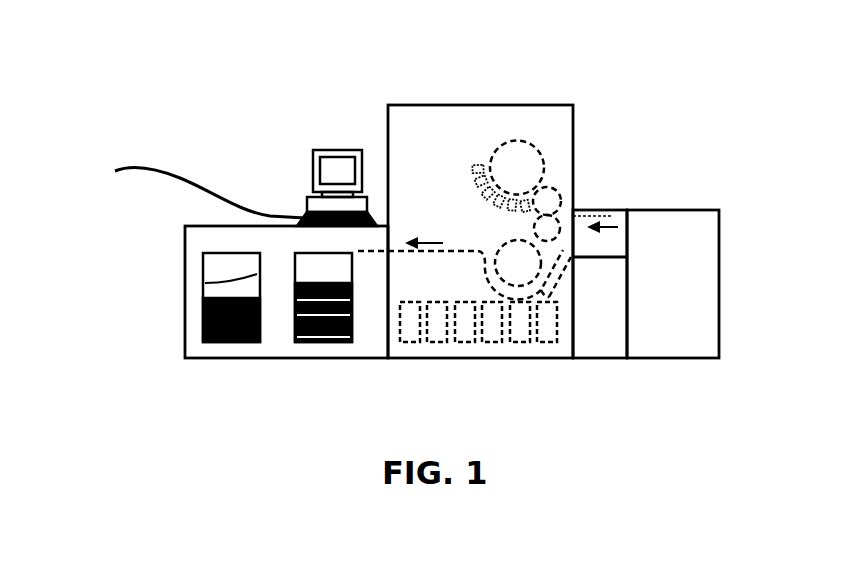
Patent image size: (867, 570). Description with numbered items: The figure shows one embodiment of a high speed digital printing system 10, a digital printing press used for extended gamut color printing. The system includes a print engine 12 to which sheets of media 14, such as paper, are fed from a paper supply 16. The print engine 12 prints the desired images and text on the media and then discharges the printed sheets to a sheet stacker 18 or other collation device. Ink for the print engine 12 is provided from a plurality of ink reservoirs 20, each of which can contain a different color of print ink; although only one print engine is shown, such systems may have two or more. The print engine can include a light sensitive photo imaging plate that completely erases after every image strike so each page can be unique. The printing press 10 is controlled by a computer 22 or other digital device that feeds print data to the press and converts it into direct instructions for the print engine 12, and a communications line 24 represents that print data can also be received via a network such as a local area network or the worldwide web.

The high speed digital printing system 10 is at (228, 78).
The print engine 12 is at (552, 122).
The sheets of media 14 is at (385, 242).
The paper supply 16 is at (680, 289).
The sheet stacker 18 is at (195, 318).
The ink reservoirs 20 is at (470, 328).
The computer 22 is at (333, 165).
The communications line 24 is at (178, 178).